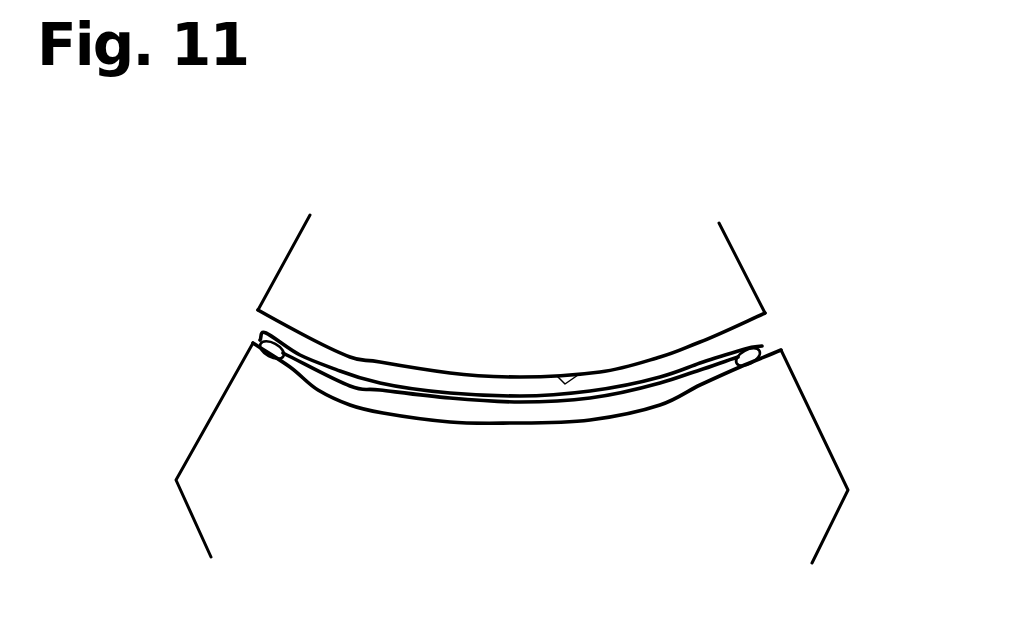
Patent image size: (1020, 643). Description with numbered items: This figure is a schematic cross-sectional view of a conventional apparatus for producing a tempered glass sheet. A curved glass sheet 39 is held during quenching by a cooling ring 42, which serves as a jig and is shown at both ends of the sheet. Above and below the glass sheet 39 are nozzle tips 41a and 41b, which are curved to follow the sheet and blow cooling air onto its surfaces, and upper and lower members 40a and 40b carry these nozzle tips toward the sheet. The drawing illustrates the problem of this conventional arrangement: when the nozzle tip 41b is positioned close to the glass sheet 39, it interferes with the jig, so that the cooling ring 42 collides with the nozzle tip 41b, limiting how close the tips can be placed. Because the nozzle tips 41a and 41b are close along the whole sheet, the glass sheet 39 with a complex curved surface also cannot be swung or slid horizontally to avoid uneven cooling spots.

The glass sheet 39 is at (509, 315).
The first member 40a is at (303, 262).
The second member 40b is at (206, 488).
The nozzle tip 41a is at (584, 372).
The nozzle tip 41b is at (676, 398).
The cooling ring 42 is at (265, 347).